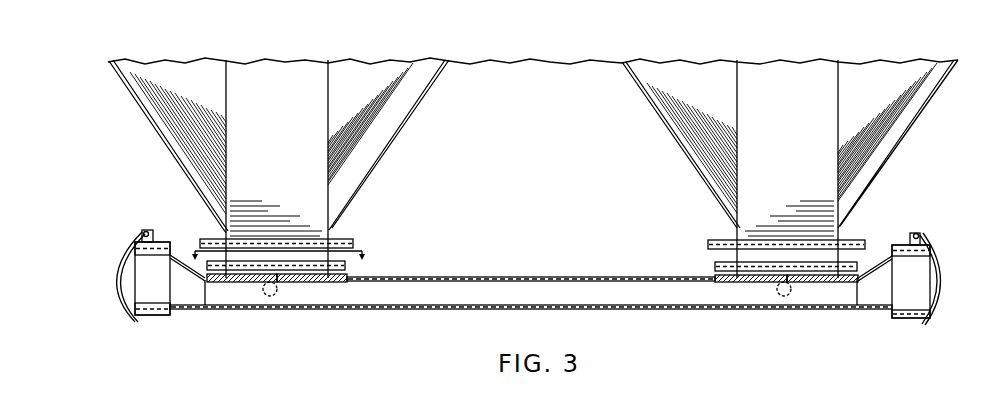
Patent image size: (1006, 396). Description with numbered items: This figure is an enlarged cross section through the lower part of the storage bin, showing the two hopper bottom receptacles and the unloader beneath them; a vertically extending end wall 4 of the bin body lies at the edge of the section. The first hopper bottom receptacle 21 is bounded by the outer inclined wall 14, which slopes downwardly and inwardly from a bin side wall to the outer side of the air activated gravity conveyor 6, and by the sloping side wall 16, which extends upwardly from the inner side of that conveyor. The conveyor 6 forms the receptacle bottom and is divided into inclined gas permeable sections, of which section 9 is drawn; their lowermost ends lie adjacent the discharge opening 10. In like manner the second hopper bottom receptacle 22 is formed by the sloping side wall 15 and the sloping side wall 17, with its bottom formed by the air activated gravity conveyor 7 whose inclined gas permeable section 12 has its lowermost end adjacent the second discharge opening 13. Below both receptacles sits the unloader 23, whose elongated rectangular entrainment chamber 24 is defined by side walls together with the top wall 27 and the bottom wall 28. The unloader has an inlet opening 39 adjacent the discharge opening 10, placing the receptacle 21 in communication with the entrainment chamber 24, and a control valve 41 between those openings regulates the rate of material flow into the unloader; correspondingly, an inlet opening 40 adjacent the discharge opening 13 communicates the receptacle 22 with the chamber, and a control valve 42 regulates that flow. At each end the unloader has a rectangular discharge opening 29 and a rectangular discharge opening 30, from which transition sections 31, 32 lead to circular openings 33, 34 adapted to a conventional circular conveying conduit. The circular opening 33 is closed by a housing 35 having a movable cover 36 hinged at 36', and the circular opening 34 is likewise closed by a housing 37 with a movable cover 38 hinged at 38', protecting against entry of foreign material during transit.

The end wall 4 is at (279, 253).
The air activated gravity conveyor 6 is at (333, 78).
The air activated gravity conveyor 7 is at (845, 90).
The gas permeable section 9 is at (315, 108).
The discharge opening 10 is at (332, 240).
The gas permeable section 12 is at (823, 122).
The second discharge opening 13 is at (820, 255).
The outer inclined wall 14 is at (153, 127).
The sloping side wall 15 is at (937, 98).
The sloping side wall 16 is at (417, 106).
The sloping side wall 17 is at (660, 127).
The hopper bottom receptacle 21 is at (145, 83).
The second hopper bottom receptacle 22 is at (643, 73).
The unloader 23 is at (467, 271).
The entrainment chamber 24 is at (612, 310).
The top wall 27 is at (591, 274).
The bottom wall 28 is at (426, 310).
The rectangular discharge opening 29 is at (862, 297).
The rectangular discharge opening 30 is at (203, 296).
The transition section 31 is at (880, 311).
The transition section 32 is at (186, 306).
The circular opening 33 is at (930, 293).
The circular opening 34 is at (136, 298).
The housing 35 is at (894, 247).
The movable cover 36 is at (947, 279).
The hinge 36' is at (940, 232).
The housing 37 is at (160, 240).
The movable cover 38 is at (112, 277).
The hinge 38' is at (122, 231).
The inlet opening 39 is at (327, 283).
The inlet opening 40 is at (737, 283).
The control valve 41 is at (291, 283).
The control valve 42 is at (808, 283).